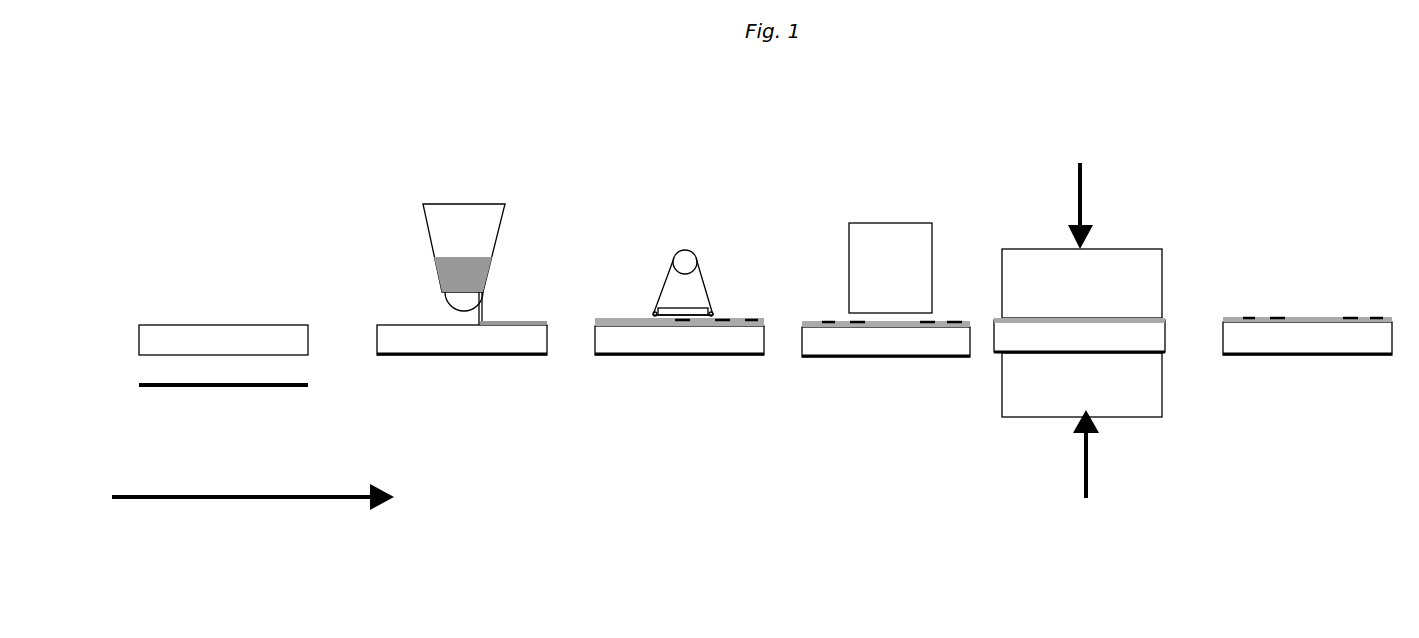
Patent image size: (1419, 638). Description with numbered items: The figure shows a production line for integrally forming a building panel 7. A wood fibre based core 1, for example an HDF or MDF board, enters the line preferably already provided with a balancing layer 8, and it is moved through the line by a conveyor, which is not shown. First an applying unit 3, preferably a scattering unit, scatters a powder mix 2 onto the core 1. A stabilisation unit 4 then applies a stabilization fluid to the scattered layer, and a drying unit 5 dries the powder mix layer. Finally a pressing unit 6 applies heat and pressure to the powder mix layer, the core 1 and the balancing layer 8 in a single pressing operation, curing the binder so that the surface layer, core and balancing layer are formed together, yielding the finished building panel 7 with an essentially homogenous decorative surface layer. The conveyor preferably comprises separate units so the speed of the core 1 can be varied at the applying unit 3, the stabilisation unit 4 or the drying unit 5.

The core 1 is at (238, 330).
The powder mix 2 is at (507, 320).
The applying unit 3 is at (492, 207).
The stabilisation unit 4 is at (677, 285).
The drying unit 5 is at (863, 245).
The pressing unit 6 is at (1079, 330).
The building panel 7 is at (1278, 333).
The balancing layer 8 is at (223, 388).